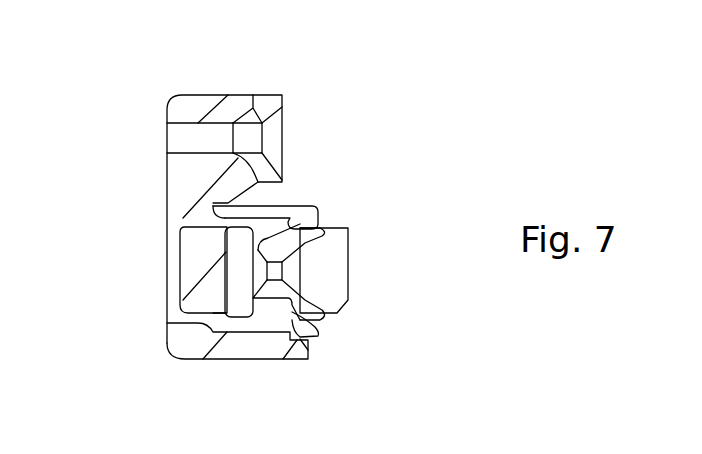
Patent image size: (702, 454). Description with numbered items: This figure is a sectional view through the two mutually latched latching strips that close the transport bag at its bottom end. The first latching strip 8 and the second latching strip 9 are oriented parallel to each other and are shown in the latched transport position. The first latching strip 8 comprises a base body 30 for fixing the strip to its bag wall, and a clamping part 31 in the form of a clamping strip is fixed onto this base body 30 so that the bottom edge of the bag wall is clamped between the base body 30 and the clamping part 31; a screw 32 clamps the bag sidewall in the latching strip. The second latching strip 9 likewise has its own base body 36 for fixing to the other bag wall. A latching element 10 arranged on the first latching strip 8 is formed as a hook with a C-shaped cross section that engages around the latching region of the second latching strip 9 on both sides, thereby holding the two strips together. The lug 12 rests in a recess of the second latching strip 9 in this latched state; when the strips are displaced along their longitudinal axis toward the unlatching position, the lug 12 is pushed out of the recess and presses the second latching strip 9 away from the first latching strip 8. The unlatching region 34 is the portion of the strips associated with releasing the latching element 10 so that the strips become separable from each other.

The first latching strip 8 is at (147, 152).
The second latching strip 9 is at (382, 227).
The latching element 10 is at (305, 218).
The lug 12 is at (240, 291).
The base body 30 is at (176, 193).
The clamping part 31 is at (265, 107).
The screw 32 is at (273, 137).
The unlatching region 34 is at (272, 288).
The base body 36 is at (325, 272).